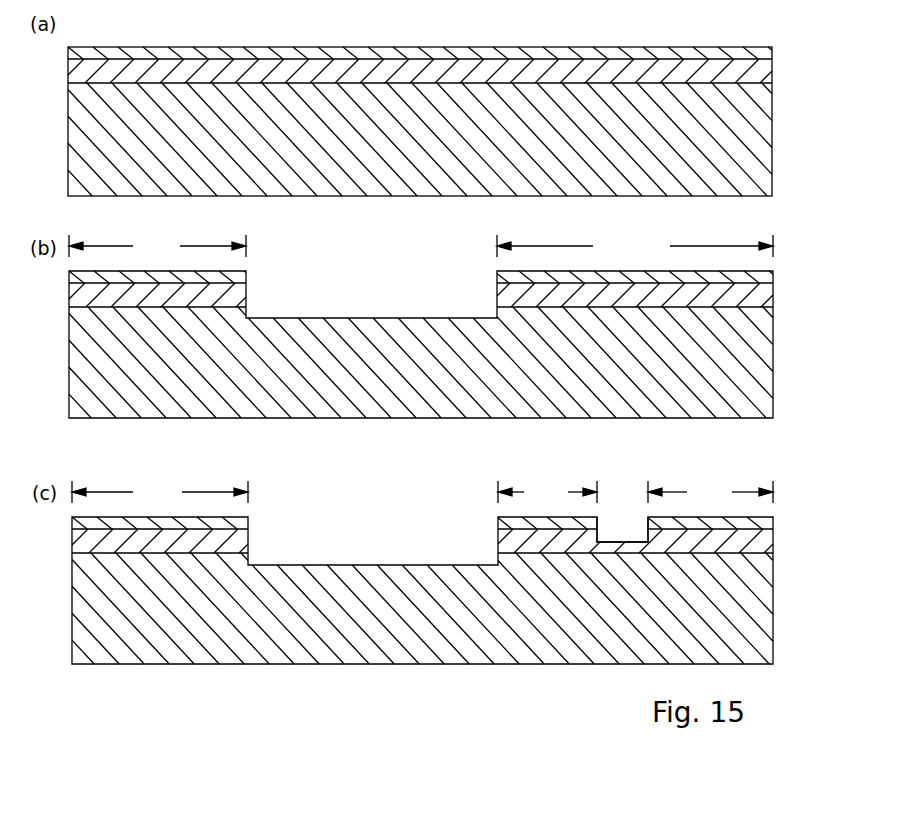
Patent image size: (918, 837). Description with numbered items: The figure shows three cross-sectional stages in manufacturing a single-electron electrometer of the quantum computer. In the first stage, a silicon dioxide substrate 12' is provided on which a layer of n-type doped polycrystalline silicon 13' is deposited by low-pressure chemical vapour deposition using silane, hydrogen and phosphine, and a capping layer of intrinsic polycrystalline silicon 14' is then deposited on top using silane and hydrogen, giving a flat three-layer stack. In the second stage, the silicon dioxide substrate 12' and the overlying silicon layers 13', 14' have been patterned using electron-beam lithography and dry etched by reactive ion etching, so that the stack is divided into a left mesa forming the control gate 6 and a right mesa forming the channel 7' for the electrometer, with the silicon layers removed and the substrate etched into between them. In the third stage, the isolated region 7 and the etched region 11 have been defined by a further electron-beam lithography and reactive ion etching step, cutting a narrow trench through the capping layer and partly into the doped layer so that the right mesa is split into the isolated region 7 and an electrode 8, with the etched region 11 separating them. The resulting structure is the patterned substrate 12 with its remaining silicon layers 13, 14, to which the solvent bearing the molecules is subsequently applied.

The silicon dioxide substrate 12' is at (458, 139).
The layer of n-type doped polycrystalline silicon 13' is at (458, 183).
The capping layer of intrinsic polycrystalline silicon 14' is at (458, 159).
The patterned substrate 12 is at (456, 485).
The silicon layer 13 is at (458, 542).
The silicon layer 14 is at (458, 517).
The control gate 6 is at (158, 369).
The channel 7' is at (635, 246).
The isolated region 7 is at (547, 492).
The electrode 8 is at (710, 492).
The etched region 11 is at (622, 512).